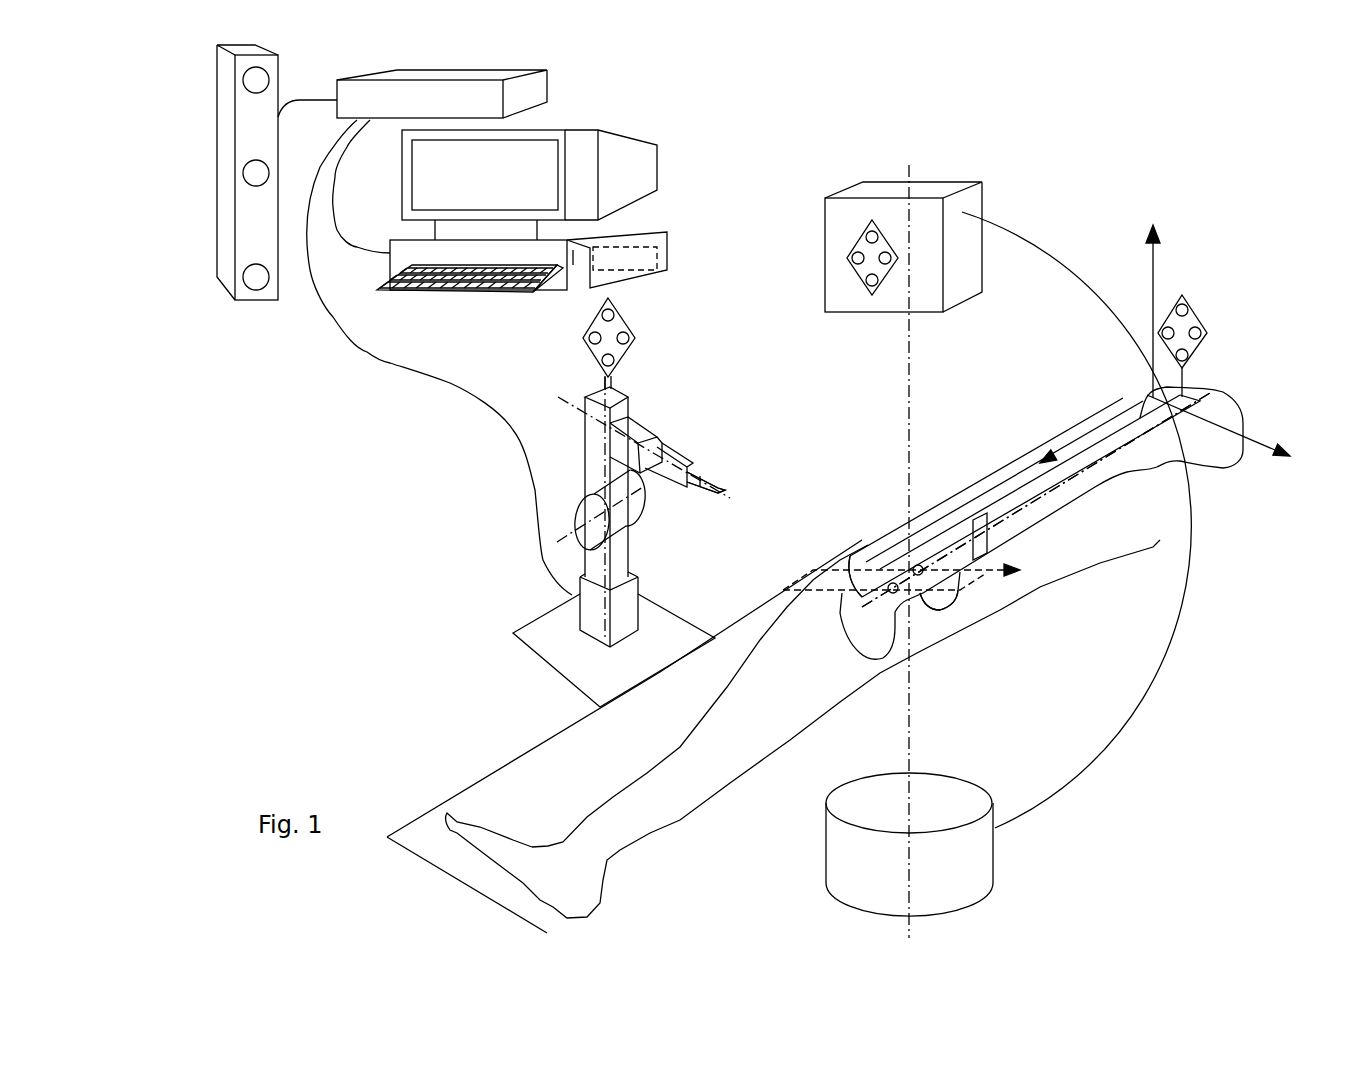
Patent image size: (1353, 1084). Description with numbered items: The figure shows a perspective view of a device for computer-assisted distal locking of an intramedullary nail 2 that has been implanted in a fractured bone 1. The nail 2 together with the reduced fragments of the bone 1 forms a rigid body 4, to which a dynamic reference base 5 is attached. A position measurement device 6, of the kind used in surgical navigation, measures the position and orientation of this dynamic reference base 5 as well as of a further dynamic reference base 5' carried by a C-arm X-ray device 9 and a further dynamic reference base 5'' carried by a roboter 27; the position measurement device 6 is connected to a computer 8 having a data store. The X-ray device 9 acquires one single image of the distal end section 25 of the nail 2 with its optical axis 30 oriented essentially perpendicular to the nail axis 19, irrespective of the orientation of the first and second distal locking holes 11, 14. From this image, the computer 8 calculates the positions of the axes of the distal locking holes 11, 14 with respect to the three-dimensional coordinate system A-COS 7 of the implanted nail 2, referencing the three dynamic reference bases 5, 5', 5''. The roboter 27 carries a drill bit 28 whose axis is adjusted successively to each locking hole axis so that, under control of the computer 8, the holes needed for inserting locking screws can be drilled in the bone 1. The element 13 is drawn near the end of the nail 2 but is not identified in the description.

The fractured bone 1 is at (1225, 453).
The intramedullary nail 2 is at (1210, 403).
The rigid body 4 is at (1095, 486).
The dynamic reference base 5 is at (1196, 333).
The dynamic reference base 5' is at (891, 207).
The dynamic reference base 5'' is at (647, 339).
The position measurement device 6 is at (268, 312).
The three-dimensional coordinate system A-COS 7 is at (1155, 255).
The computer 8 is at (656, 214).
The C-arm X-ray device 9 is at (1002, 842).
The first distal locking hole 11 is at (920, 565).
The guide end 13 is at (863, 610).
The second distal locking hole 14 is at (891, 584).
The nail axis 19 is at (872, 600).
The distal end section 25 is at (927, 612).
The roboter 27 is at (575, 558).
The drill bit 28 is at (706, 486).
The optical axis 30 is at (910, 749).